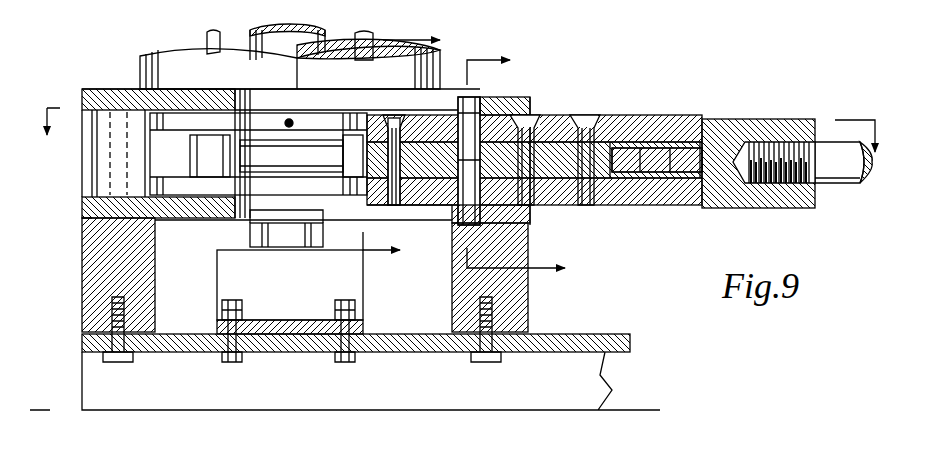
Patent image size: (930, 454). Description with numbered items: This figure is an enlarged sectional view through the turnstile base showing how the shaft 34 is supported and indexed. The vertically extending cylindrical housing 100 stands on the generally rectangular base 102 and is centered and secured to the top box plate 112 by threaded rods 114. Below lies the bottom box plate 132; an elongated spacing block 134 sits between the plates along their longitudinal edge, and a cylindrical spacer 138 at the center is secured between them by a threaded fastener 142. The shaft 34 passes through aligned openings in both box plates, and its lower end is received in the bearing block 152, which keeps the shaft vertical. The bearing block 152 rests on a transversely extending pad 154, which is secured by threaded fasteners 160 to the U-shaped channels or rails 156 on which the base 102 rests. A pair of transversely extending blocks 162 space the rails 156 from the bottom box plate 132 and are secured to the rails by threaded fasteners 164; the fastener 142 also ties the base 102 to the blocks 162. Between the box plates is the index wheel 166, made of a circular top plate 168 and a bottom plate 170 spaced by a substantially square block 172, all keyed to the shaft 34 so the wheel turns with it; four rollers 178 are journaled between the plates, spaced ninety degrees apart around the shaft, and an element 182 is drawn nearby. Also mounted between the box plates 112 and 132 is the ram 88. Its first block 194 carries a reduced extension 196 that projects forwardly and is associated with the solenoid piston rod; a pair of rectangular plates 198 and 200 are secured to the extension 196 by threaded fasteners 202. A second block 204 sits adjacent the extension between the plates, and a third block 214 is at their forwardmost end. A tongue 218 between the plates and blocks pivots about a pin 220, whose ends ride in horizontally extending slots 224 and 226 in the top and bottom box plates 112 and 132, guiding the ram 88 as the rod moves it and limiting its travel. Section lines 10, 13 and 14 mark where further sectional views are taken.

The section line 10 is at (463, 145).
The section line 13 is at (416, 146).
The section line 14 is at (529, 166).
The shaft 34 is at (252, 44).
The ram 88 is at (722, 116).
The cylindrical housing 100 is at (147, 70).
The base 102 is at (534, 96).
The top box plate 112 is at (80, 95).
The threaded rod 114 is at (205, 37).
The bottom box plate 132 is at (530, 214).
The spacing block 134 is at (85, 162).
The cylindrical spacer 138 is at (100, 173).
The threaded fastener 142 is at (80, 230).
The bearing block 152 is at (363, 272).
The pad 154 is at (363, 325).
The U-shaped channel 156 is at (615, 390).
The threaded fastener 160 is at (333, 362).
The transversely extending block 162 is at (147, 282).
The threaded fastener 164 is at (488, 362).
The index wheel 166 is at (218, 202).
The circular top plate 168 is at (332, 125).
The bottom plate 170 is at (312, 190).
The square block 172 is at (254, 142).
The roller 178 is at (197, 155).
The ball 182 is at (287, 130).
The first block 194 is at (780, 118).
The reduced extension 196 is at (845, 180).
The rectangular plate 198 is at (656, 118).
The rectangular plate 200 is at (656, 208).
The threaded fastener 202 is at (712, 228).
The second block 204 is at (620, 107).
The third block 214 is at (418, 168).
The tongue 218 is at (510, 88).
The pin 220 is at (452, 214).
The horizontally extending slot 224 is at (262, 100).
The horizontally extending slot 226 is at (269, 230).